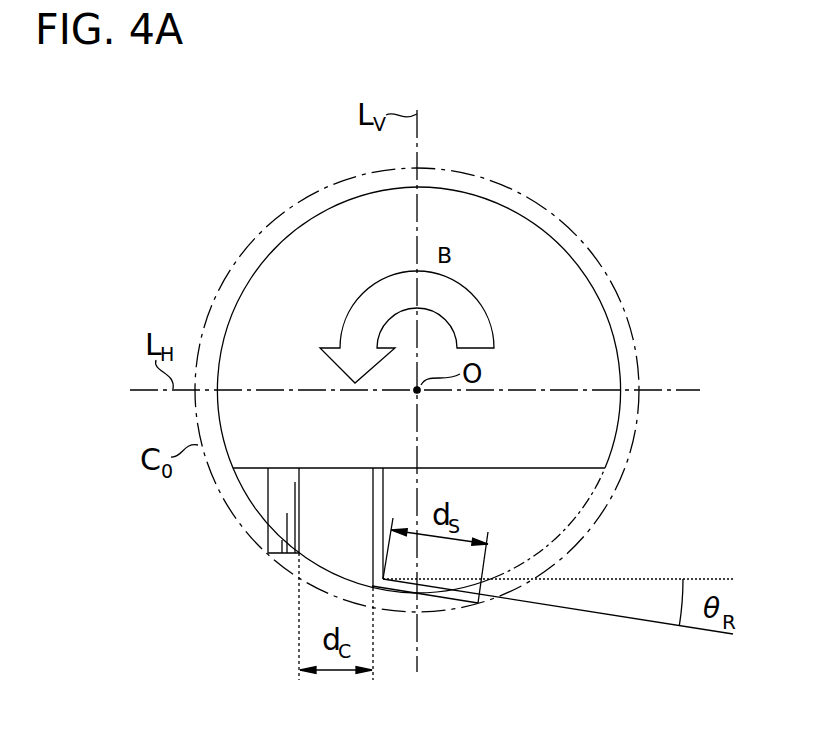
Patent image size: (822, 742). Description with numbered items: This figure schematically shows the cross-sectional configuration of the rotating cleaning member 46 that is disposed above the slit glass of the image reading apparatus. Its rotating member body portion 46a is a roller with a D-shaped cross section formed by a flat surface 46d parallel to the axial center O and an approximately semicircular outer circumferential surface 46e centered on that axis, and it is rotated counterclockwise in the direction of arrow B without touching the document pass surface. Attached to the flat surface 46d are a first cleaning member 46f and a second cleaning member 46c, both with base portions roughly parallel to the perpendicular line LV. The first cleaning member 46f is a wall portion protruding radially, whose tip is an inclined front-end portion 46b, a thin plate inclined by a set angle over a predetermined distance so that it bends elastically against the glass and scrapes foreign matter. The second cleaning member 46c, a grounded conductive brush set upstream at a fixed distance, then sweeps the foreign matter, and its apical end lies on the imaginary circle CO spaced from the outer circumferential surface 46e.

The rotating cleaning member 46 is at (553, 182).
The rotating member body portion 46a is at (300, 240).
The inclined front-end portion 46b is at (482, 600).
The second cleaning member 46c is at (267, 538).
The flat surface 46d is at (537, 471).
The outer circumferential surface 46e is at (597, 295).
The first cleaning member 46f is at (354, 521).